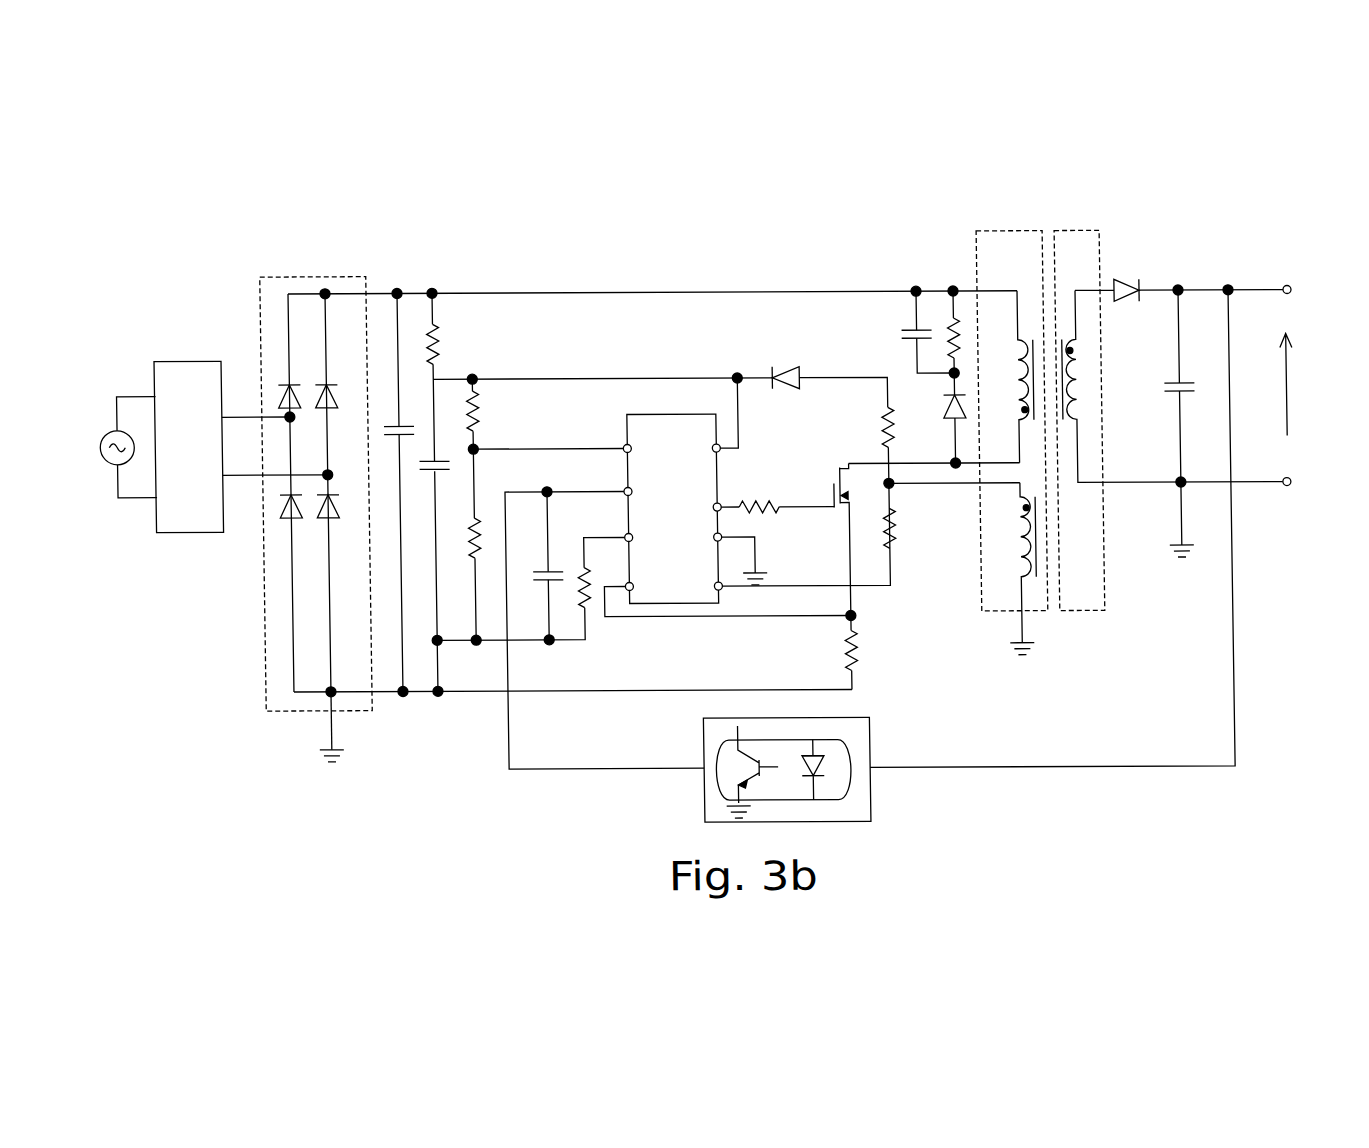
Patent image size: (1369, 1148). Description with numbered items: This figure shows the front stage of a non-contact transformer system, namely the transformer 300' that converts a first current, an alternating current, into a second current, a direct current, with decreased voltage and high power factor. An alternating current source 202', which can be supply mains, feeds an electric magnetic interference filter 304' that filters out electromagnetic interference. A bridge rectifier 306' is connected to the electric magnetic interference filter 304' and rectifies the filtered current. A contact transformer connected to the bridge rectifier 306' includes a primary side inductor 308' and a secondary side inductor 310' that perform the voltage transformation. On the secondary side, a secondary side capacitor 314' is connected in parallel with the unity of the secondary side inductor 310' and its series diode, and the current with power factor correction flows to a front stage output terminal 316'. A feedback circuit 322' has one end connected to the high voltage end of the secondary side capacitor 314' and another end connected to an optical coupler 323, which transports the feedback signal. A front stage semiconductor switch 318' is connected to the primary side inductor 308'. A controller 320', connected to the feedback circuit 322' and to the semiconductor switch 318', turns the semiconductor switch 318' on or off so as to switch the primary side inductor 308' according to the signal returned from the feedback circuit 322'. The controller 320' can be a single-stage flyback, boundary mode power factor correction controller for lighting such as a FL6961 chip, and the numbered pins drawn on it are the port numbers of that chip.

The transformer 300' is at (716, 470).
The alternating current source 202' is at (118, 401).
The electric magnetic interference filter 304' is at (191, 418).
The bridge rectifier 306' is at (296, 484).
The primary side inductor 308' is at (1028, 406).
The secondary side inductor 310' is at (1169, 385).
The secondary side capacitor 314' is at (1151, 423).
The front stage output terminal 316' is at (1315, 385).
The front stage semiconductor switch 318' is at (802, 520).
The controller 320' is at (672, 454).
The feedback circuit 322' is at (1049, 529).
The optical coupler 323 is at (696, 772).